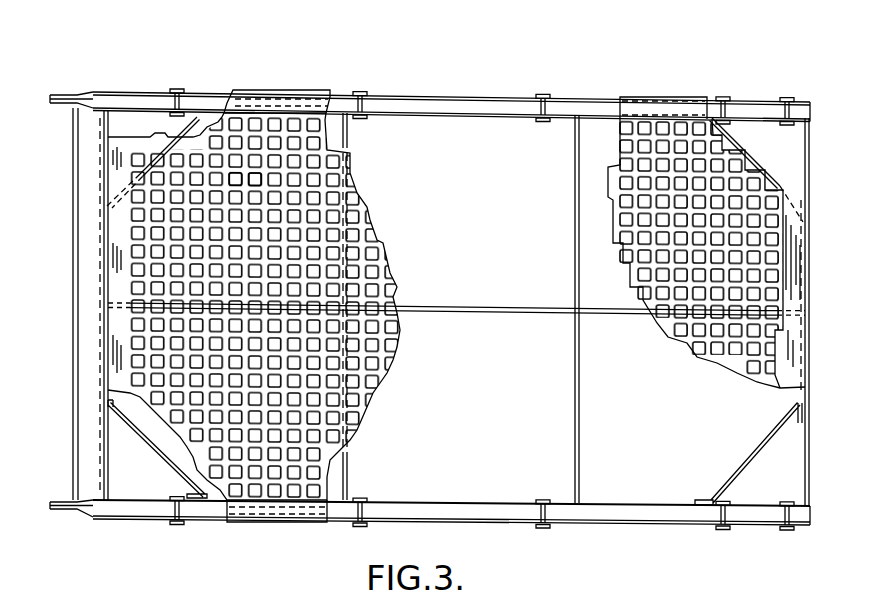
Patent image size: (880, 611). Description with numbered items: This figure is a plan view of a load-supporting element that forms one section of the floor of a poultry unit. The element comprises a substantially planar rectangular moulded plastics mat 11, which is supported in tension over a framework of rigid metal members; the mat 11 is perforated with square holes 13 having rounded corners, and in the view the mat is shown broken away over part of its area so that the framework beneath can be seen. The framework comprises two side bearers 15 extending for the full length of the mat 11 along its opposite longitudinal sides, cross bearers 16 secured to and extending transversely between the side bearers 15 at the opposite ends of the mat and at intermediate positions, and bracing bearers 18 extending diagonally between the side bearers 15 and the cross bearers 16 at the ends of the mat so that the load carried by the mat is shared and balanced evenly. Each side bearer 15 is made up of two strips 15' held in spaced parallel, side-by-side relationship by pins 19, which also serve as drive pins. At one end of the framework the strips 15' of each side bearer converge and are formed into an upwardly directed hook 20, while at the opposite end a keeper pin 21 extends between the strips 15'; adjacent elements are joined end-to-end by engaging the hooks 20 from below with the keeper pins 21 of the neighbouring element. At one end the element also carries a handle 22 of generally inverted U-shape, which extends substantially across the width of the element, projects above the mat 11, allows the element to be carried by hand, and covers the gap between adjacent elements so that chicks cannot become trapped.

The moulded plastics mat 11 is at (297, 130).
The square holes 13 is at (236, 176).
The side bearers 15 is at (451, 313).
The strips 15' is at (451, 283).
The cross bearers 16 is at (105, 380).
The bracing bearers 18 is at (140, 443).
The pins 19 is at (372, 107).
The hook 20 is at (67, 92).
The keeper pin 21 is at (783, 103).
The handle 22 is at (93, 278).